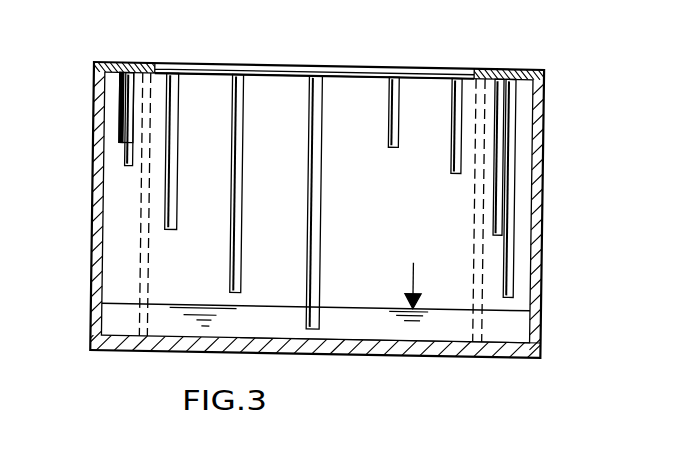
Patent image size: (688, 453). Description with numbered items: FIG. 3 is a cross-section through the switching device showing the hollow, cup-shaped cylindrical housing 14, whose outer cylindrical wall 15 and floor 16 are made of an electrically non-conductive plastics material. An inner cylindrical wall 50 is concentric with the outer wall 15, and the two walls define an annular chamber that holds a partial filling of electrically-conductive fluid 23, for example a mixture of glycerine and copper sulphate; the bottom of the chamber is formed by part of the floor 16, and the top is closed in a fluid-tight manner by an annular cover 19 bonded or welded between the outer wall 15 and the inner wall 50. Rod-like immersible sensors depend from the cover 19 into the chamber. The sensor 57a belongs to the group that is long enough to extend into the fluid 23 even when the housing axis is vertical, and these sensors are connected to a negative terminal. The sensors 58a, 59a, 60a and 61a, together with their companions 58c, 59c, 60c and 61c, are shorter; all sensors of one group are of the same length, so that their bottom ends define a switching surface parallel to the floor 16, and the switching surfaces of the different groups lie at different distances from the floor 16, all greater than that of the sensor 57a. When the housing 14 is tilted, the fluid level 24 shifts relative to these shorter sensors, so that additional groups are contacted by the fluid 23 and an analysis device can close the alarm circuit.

The housing 14 is at (552, 117).
The cylindrical wall 15 is at (541, 180).
The floor 16 is at (496, 351).
The annular cover 19 is at (507, 70).
The electrically-conductive fluid 23 is at (383, 349).
The fluid level 24 is at (355, 306).
The inner cylindrical wall 50 is at (530, 272).
The immersible sensor 57a is at (323, 206).
The immersible sensor 58a is at (246, 101).
The immersible sensor 59a is at (179, 152).
The immersible sensor 60a is at (128, 155).
The immersible sensor 61a is at (125, 95).
The immersible sensor 58c is at (502, 290).
The immersible sensor 59c is at (498, 222).
The immersible sensor 60c is at (455, 162).
The immersible sensor 61c is at (394, 102).